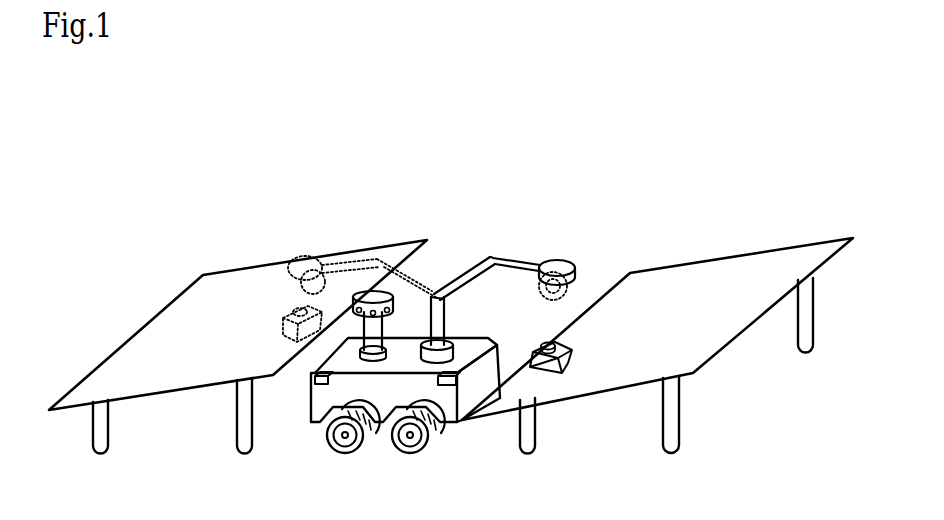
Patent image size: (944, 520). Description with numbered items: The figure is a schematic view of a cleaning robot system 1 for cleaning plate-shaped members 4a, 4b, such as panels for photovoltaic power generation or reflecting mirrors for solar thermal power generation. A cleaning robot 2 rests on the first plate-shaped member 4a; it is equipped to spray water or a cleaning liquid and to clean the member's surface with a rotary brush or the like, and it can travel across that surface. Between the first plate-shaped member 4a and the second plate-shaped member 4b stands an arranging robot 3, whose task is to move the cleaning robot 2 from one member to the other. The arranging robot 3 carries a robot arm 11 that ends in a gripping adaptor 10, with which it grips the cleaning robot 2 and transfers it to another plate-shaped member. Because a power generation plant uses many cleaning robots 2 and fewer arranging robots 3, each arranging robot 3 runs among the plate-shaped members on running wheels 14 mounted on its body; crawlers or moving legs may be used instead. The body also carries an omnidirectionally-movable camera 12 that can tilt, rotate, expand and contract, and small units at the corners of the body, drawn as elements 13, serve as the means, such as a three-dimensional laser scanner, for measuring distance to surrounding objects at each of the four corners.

The cleaning robot system 1 is at (645, 165).
The cleaning robot 2 is at (570, 350).
The arranging robot 3 is at (458, 218).
The first plate-shaped member 4a is at (703, 355).
The second plate-shaped member 4b is at (192, 302).
The gripping adaptor 10 is at (570, 267).
The robot arm 11 is at (472, 277).
The omnidirectionally-movable camera 12 is at (377, 297).
The sensor 13 is at (313, 382).
The running wheels 14 is at (407, 450).